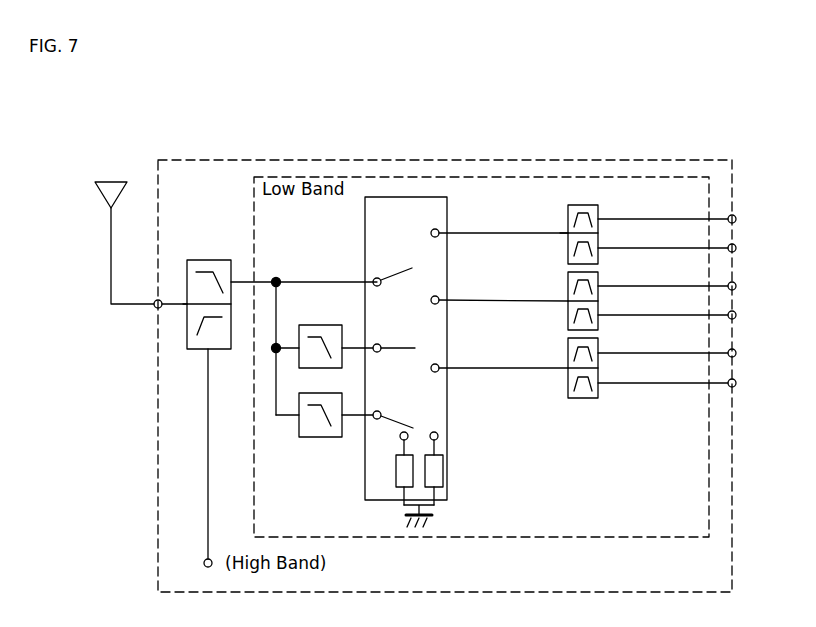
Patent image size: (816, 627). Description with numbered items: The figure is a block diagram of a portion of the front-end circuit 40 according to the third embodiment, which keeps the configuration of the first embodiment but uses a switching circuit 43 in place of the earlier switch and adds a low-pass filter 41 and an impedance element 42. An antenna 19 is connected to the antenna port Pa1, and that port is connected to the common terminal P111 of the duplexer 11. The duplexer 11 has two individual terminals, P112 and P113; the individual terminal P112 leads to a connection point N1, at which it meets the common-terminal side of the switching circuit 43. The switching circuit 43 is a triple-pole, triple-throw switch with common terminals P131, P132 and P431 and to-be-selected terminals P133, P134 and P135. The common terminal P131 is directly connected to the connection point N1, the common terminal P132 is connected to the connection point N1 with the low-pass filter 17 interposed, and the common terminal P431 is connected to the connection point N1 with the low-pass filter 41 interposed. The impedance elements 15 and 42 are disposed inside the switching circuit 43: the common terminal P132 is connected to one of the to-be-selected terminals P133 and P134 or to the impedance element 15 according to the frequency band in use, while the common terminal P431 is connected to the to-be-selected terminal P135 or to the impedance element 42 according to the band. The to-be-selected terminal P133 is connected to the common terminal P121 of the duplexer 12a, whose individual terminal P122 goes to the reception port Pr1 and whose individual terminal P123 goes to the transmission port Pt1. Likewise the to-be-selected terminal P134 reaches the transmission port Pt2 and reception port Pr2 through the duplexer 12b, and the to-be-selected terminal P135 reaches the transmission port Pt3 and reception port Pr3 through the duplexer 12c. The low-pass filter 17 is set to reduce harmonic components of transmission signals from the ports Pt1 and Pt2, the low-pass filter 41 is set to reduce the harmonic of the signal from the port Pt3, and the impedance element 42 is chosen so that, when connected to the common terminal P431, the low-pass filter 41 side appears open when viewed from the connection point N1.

The front-end circuit 40 is at (578, 160).
The antenna 19 is at (111, 182).
The duplexer 11 is at (212, 260).
The switching circuit 43 is at (418, 197).
The low-pass filter 17 is at (299, 368).
The low-pass filter 41 is at (299, 437).
The impedance element 42 is at (396, 480).
The impedance element 15 is at (443, 470).
The duplexer 12a is at (575, 206).
The duplexer 12b is at (600, 276).
The duplexer 12c is at (600, 342).
The connection point N1 is at (278, 285).
The antenna port Pa1 is at (154, 307).
The common terminal P111 is at (185, 307).
The individual terminal P112 is at (233, 280).
The individual terminal P113 is at (207, 349).
The common terminal P131 is at (374, 279).
The common terminal P132 is at (374, 345).
The to-be-selected terminal P133 is at (438, 230).
The to-be-selected terminal P134 is at (438, 297).
The to-be-selected terminal P135 is at (438, 366).
The common terminal P431 is at (376, 419).
The common terminal P121 is at (567, 232).
The individual terminal P122 is at (600, 219).
The individual terminal P123 is at (600, 248).
The reception port Pr1 is at (750, 219).
The transmission port Pt1 is at (750, 249).
The reception port Pr2 is at (750, 286).
The transmission port Pt2 is at (750, 315).
The reception port Pr3 is at (750, 353).
The transmission port Pt3 is at (750, 383).